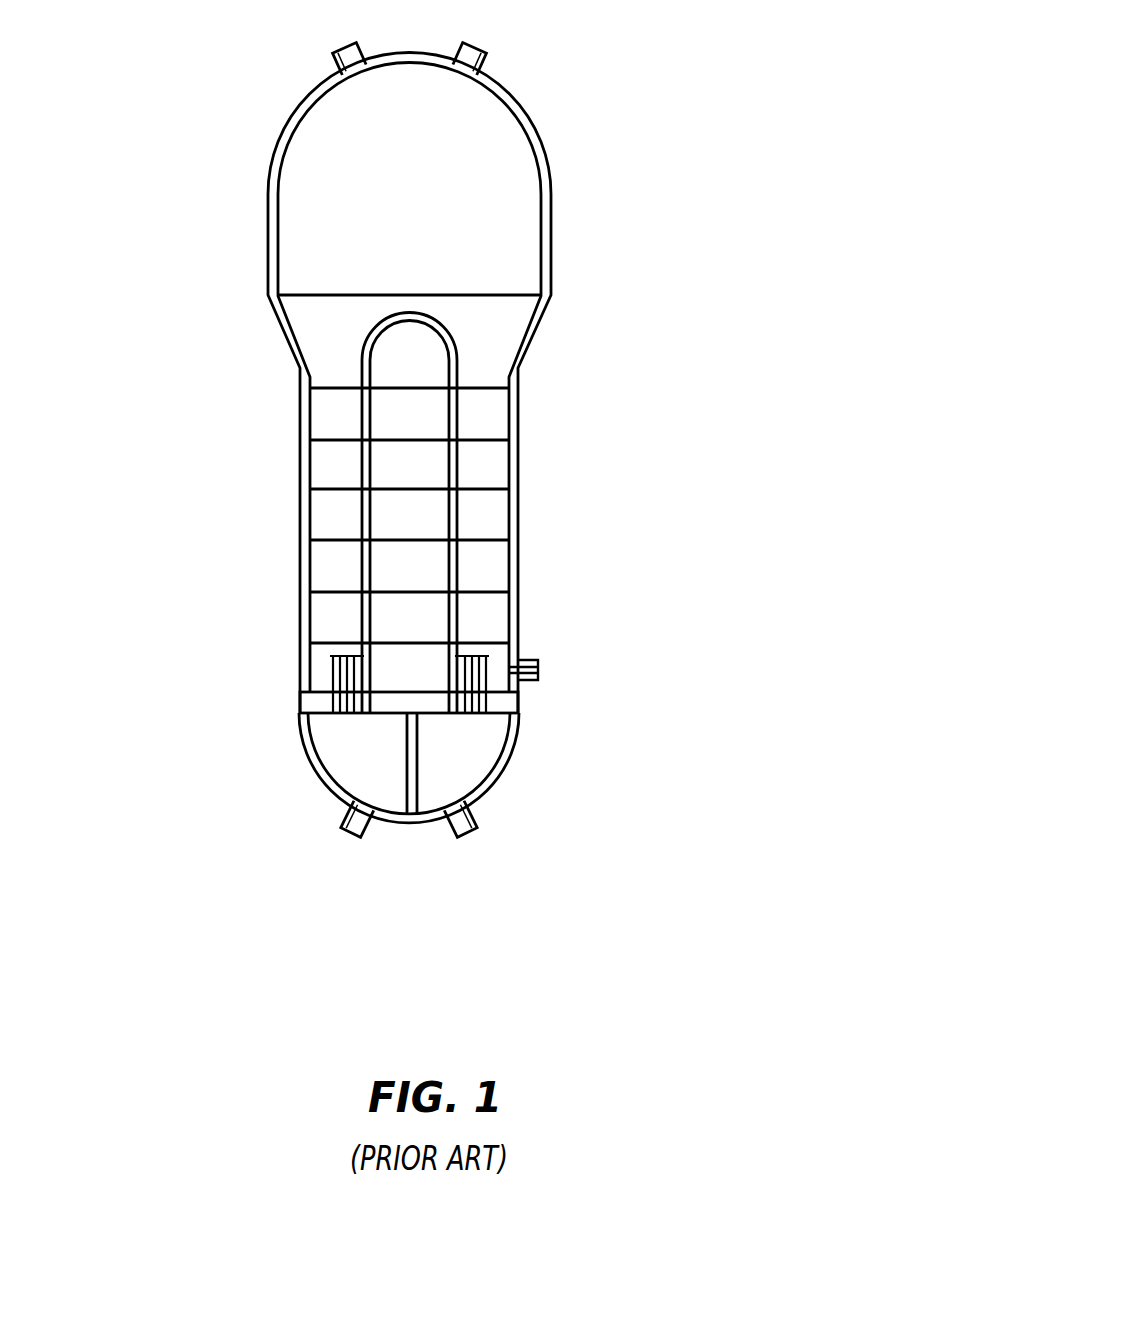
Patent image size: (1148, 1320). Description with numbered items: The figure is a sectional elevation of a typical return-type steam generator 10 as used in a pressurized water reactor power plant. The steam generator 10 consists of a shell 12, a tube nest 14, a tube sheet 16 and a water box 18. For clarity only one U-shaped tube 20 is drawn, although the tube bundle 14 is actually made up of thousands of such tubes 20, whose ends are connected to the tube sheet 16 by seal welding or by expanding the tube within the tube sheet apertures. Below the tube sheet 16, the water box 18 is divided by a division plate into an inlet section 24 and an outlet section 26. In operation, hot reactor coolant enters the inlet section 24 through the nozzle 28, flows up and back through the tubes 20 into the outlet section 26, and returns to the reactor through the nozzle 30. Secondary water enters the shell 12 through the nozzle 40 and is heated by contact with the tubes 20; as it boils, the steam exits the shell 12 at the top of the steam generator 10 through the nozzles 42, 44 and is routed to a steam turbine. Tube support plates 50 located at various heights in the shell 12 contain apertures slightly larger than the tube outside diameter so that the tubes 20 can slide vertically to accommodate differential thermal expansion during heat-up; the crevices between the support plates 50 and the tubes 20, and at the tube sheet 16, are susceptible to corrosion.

The steam generator 10 is at (560, 179).
The shell 12 is at (519, 443).
The tube nest 14 is at (480, 657).
The tube sheet 16 is at (519, 705).
The water box 18 is at (503, 772).
The U shaped tube 20 is at (455, 468).
The inlet section 24 is at (472, 767).
The outlet section 26 is at (375, 767).
The nozzle 28 is at (481, 832).
The nozzle 30 is at (340, 822).
The nozzle 40 is at (538, 663).
The nozzle 42 is at (345, 58).
The nozzle 44 is at (488, 53).
The tube support plates 50 is at (318, 389).